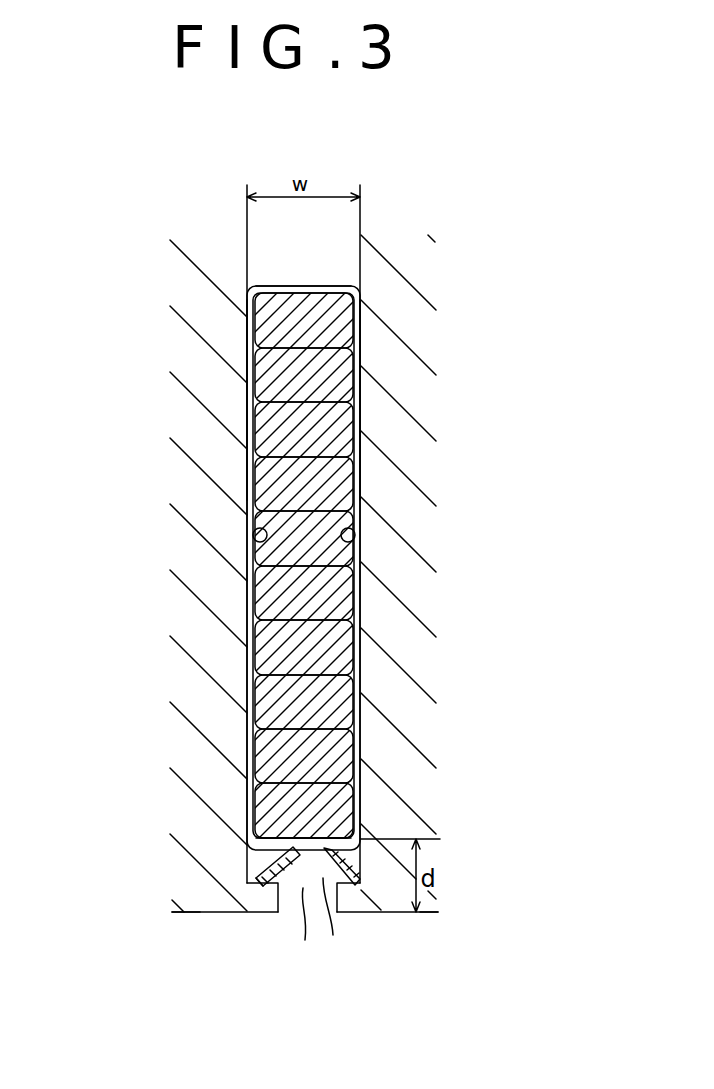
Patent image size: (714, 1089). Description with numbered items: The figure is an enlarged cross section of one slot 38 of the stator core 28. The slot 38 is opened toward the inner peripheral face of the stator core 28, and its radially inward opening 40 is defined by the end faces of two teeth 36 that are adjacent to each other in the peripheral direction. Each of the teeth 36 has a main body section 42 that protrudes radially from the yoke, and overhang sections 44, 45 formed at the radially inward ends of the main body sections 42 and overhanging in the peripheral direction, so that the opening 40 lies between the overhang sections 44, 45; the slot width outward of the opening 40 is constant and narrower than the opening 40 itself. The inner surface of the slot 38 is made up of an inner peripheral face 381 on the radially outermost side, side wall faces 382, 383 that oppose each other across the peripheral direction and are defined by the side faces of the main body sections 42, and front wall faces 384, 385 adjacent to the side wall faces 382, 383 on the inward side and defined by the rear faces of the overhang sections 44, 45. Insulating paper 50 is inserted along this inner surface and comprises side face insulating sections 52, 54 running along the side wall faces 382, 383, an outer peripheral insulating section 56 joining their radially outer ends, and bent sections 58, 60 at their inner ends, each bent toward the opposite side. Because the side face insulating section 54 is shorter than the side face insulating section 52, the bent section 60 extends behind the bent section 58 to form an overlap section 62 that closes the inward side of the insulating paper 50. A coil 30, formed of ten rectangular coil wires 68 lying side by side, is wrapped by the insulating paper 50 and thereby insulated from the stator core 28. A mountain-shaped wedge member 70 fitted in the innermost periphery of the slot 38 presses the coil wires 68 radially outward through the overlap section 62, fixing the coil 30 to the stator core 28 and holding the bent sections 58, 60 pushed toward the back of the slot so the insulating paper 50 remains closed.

The stator core 28 is at (448, 260).
The coil 30 is at (364, 485).
The teeth 36 is at (182, 923).
The slot 38 is at (243, 275).
The inner peripheral face 381 is at (339, 285).
The side wall face 382 is at (250, 407).
The side wall face 383 is at (360, 413).
The front wall face 384 is at (283, 878).
The front wall face 385 is at (334, 880).
The opening 40 is at (310, 925).
The main body section 42 is at (197, 690).
The overhang section 44 is at (265, 903).
The overhang section 45 is at (345, 902).
The insulating paper 50 is at (239, 618).
The side face insulating section 52 is at (254, 535).
The side face insulating section 54 is at (355, 533).
The outer peripheral insulating section 56 is at (258, 320).
The bent section 58 is at (275, 846).
The bent section 60 is at (307, 838).
The overlap section 62 is at (93, 755).
The coil wires 68 is at (260, 485).
The wedge member 70 is at (263, 864).